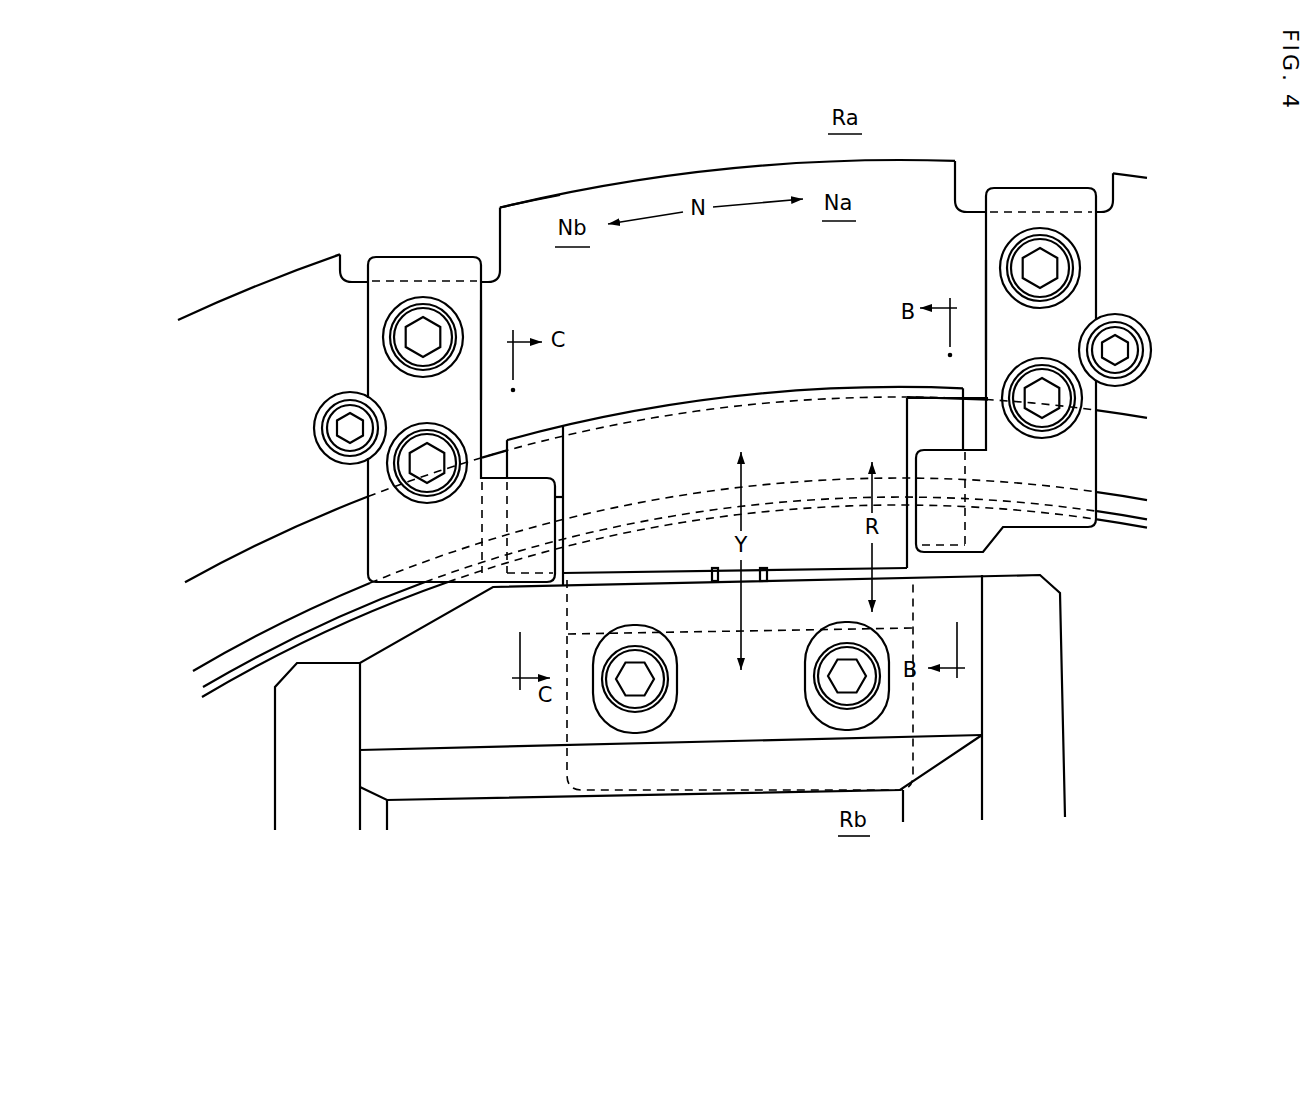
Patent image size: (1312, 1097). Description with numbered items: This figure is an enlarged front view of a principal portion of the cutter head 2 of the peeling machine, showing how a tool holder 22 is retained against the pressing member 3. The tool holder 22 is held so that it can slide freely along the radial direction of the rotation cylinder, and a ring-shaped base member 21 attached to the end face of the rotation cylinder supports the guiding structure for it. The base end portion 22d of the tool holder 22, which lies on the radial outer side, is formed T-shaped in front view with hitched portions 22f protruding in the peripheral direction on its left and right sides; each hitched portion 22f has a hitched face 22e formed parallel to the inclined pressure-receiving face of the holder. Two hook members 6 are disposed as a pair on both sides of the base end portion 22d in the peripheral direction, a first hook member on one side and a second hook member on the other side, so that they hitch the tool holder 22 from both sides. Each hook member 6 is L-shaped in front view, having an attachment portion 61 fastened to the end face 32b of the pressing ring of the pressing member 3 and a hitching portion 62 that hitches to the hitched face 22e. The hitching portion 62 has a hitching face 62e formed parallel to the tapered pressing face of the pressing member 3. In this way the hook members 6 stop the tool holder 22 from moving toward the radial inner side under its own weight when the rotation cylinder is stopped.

The cutter head 2 is at (327, 590).
The pressing member 3 is at (912, 152).
The hook member 6 is at (362, 330).
The base member 21 is at (243, 695).
The tool holder 22 is at (925, 622).
The base end portion 22d is at (722, 395).
The hitched face 22e is at (550, 458).
The hitched portion 22f is at (503, 463).
The end face 32b is at (515, 218).
The attachment portion 61 is at (480, 317).
The hitching portion 62 is at (560, 494).
The hitching face 62e is at (500, 512).